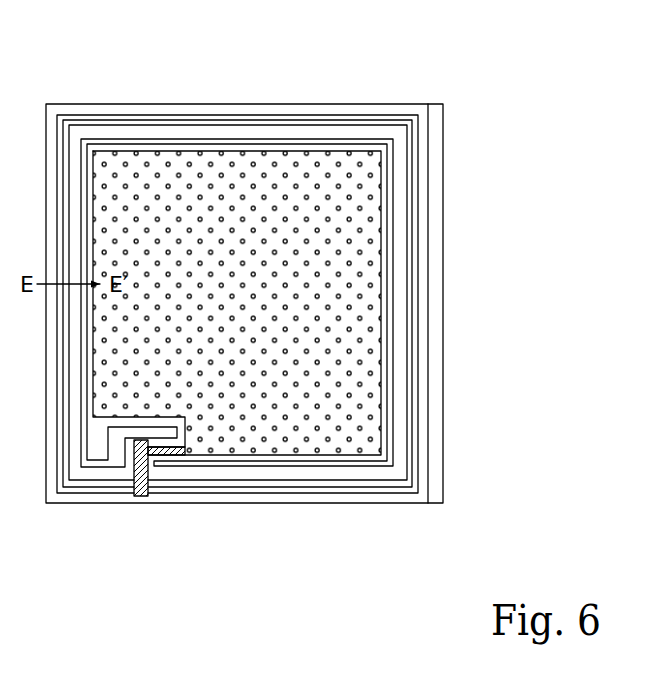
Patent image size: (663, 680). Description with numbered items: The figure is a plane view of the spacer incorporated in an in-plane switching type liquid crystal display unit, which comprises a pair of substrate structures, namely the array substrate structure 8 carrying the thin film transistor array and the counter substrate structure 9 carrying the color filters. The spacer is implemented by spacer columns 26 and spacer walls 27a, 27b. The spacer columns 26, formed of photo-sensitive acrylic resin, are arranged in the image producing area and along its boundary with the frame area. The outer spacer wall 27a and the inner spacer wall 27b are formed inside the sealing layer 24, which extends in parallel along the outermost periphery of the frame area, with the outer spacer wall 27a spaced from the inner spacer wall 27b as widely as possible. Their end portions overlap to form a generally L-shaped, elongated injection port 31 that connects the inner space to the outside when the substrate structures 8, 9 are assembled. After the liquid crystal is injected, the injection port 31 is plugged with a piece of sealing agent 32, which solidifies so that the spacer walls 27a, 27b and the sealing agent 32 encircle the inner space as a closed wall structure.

The array substrate structure 8 is at (443, 144).
The counter substrate structure 9 is at (407, 104).
The sealing layer 24 is at (410, 317).
The spacer columns 26 is at (310, 170).
The outer spacer wall 27a is at (394, 206).
The inner spacer wall 27b is at (405, 237).
The injection port 31 is at (140, 497).
The piece of sealing agent 32 is at (148, 497).